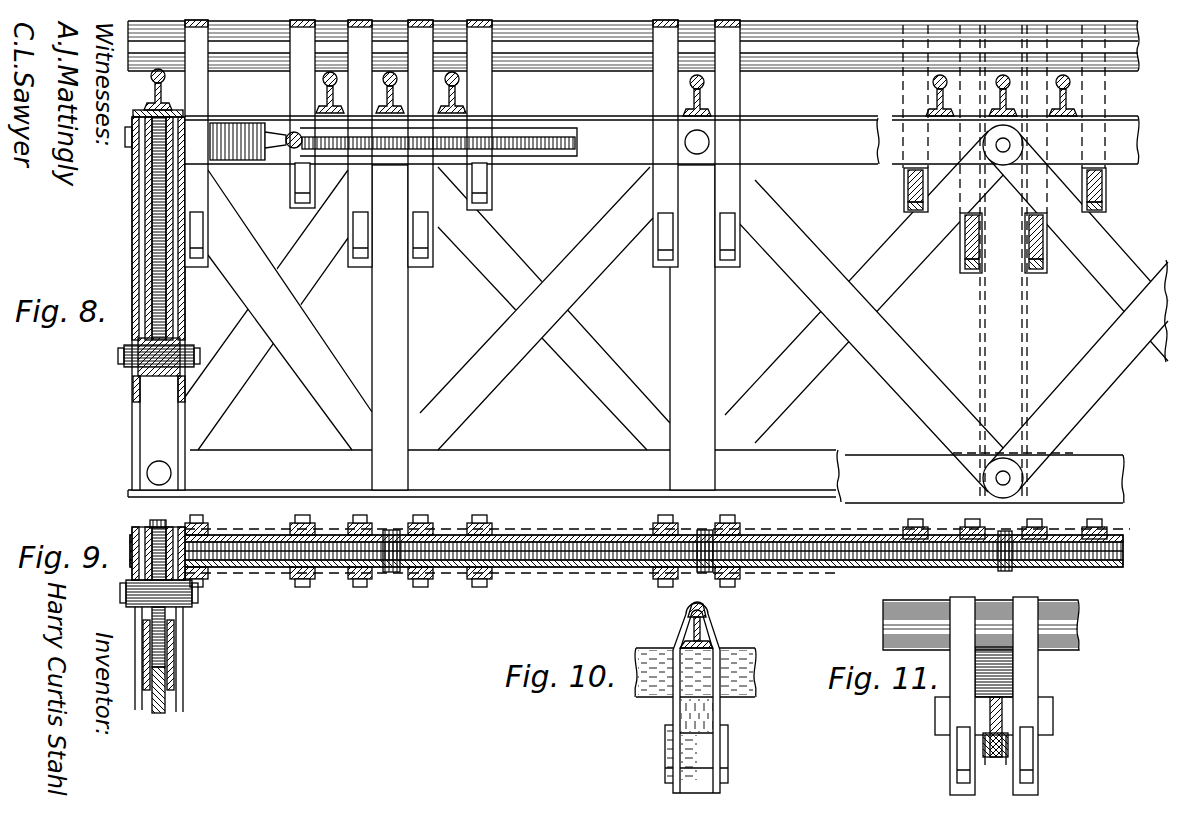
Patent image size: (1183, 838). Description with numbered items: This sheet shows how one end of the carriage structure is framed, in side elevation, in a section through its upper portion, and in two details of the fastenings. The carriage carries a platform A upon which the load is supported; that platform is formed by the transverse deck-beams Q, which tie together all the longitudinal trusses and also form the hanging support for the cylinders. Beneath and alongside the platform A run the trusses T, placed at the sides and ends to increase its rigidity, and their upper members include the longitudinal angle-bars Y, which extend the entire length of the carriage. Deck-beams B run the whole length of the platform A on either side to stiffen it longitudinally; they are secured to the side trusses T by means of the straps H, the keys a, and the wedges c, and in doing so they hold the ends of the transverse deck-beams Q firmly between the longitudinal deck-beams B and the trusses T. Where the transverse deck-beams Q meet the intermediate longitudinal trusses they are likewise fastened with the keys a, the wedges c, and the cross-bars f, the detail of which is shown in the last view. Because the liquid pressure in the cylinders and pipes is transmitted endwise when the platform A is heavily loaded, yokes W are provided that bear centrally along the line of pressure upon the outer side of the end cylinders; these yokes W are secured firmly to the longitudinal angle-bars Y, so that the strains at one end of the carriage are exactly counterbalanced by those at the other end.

In FIG. 8, the transverse deck-beam Q is at (165, 80).
In FIG. 10, the transverse deck-beam Q is at (710, 637).
In FIG. 11, the transverse deck-beam Q is at (890, 630).
In FIG. 8, the platform A is at (446, 75).
In FIG. 8, the longitudinal deck-beam B is at (813, 43).
In FIG. 8, the strap H is at (293, 89).
In FIG. 8, the truss T is at (662, 296).
In FIG. 8, the longitudinal angle-bar Y is at (140, 170).
In FIG. 9, the longitudinal angle-bar Y is at (172, 640).
In FIG. 10, the longitudinal angle-bar Y is at (743, 671).
In FIG. 11, the longitudinal angle-bar Y is at (977, 680).
In FIG. 8, the yoke W is at (553, 152).
In FIG. 8, the key a is at (196, 230).
In FIG. 10, the key a is at (722, 756).
In FIG. 11, the key a is at (960, 757).
In FIG. 8, the wedge c is at (200, 252).
In FIG. 10, the wedge c is at (687, 768).
In FIG. 11, the wedge c is at (1030, 780).
In FIG. 10, the cross-bar f is at (708, 717).
In FIG. 11, the cross-bar f is at (1053, 717).